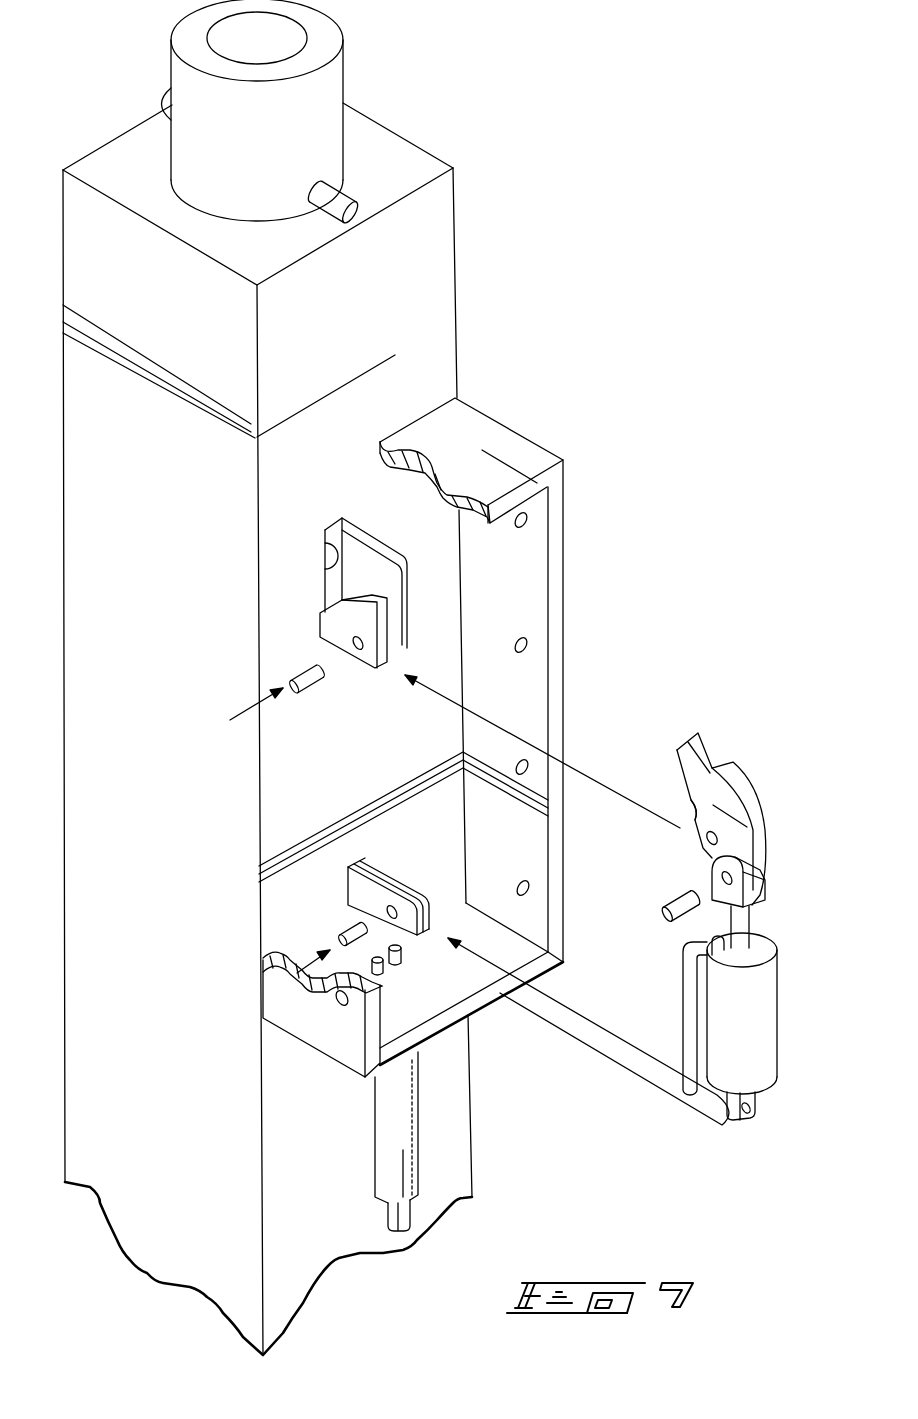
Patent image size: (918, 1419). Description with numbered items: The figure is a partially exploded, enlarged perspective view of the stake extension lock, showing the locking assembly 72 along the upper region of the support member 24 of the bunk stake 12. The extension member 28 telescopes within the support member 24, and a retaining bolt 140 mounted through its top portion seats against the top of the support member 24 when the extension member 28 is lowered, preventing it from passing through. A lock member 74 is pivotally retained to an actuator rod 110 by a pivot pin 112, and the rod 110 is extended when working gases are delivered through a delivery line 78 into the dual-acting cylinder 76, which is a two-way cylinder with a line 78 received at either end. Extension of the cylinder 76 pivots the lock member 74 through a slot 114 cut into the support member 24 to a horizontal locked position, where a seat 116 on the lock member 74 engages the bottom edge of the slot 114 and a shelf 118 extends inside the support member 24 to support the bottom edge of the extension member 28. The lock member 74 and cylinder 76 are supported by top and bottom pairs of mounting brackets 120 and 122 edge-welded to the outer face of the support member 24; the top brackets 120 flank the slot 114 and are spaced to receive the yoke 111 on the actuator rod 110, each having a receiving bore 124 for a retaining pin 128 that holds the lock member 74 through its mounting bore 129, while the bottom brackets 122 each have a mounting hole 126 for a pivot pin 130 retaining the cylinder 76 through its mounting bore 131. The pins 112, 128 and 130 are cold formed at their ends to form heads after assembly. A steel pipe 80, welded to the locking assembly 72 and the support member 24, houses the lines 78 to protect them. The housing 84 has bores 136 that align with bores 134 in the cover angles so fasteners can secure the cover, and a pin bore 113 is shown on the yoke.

The bunk stake 12 is at (396, 677).
The support member 24 is at (168, 672).
The extension member 28 is at (258, 152).
The retaining bolt 140 is at (352, 208).
The housing 84 is at (467, 440).
The bores 136 is at (515, 530).
The slot 114 is at (326, 548).
The top mounting brackets 120 is at (387, 651).
The receiving bore 124 is at (358, 650).
The retaining pin 128 is at (305, 667).
The bottom mounting brackets 122 is at (391, 853).
The mounting hole 126 is at (419, 883).
The pivot pin 130 is at (347, 923).
The delivery line 78 is at (393, 963).
The bores 134 is at (407, 1018).
The pipe 80 is at (397, 1120).
The locking assembly 72 is at (729, 859).
The lock member 74 is at (711, 785).
The shelf 118 is at (703, 753).
The seat 116 is at (690, 808).
The mounting bore 129 is at (700, 842).
The yoke 111 is at (738, 873).
The hole 113 is at (723, 880).
The actuator rod 110 is at (740, 927).
The pivot pin 112 is at (680, 920).
The dual-acting cylinder 76 is at (738, 1003).
The mounting bore 131 is at (737, 1120).